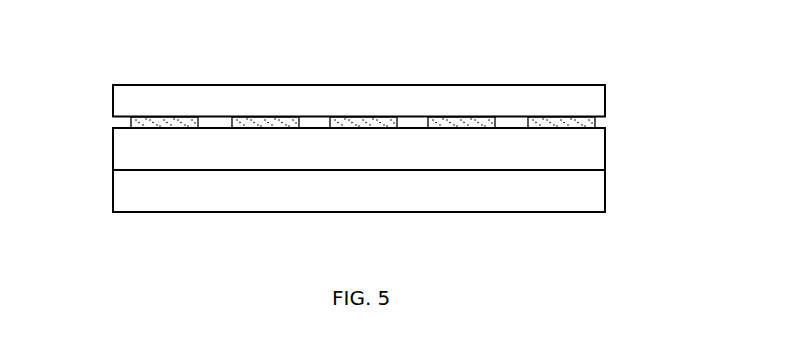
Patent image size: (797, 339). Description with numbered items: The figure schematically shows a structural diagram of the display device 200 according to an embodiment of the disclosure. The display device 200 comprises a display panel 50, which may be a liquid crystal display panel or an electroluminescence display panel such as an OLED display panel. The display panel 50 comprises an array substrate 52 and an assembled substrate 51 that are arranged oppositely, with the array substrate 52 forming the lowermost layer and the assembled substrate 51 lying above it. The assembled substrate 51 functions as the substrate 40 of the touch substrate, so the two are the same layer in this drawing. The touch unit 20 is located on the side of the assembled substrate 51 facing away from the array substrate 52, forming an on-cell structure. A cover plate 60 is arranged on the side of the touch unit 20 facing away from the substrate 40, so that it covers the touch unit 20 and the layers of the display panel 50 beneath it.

The display device 200 is at (112, 72).
The cover plate 60 is at (555, 93).
The touch unit 20 is at (585, 121).
The substrate 40 is at (113, 154).
The display panel 50 is at (657, 133).
The assembled substrate 51 is at (568, 147).
The array substrate 52 is at (570, 194).